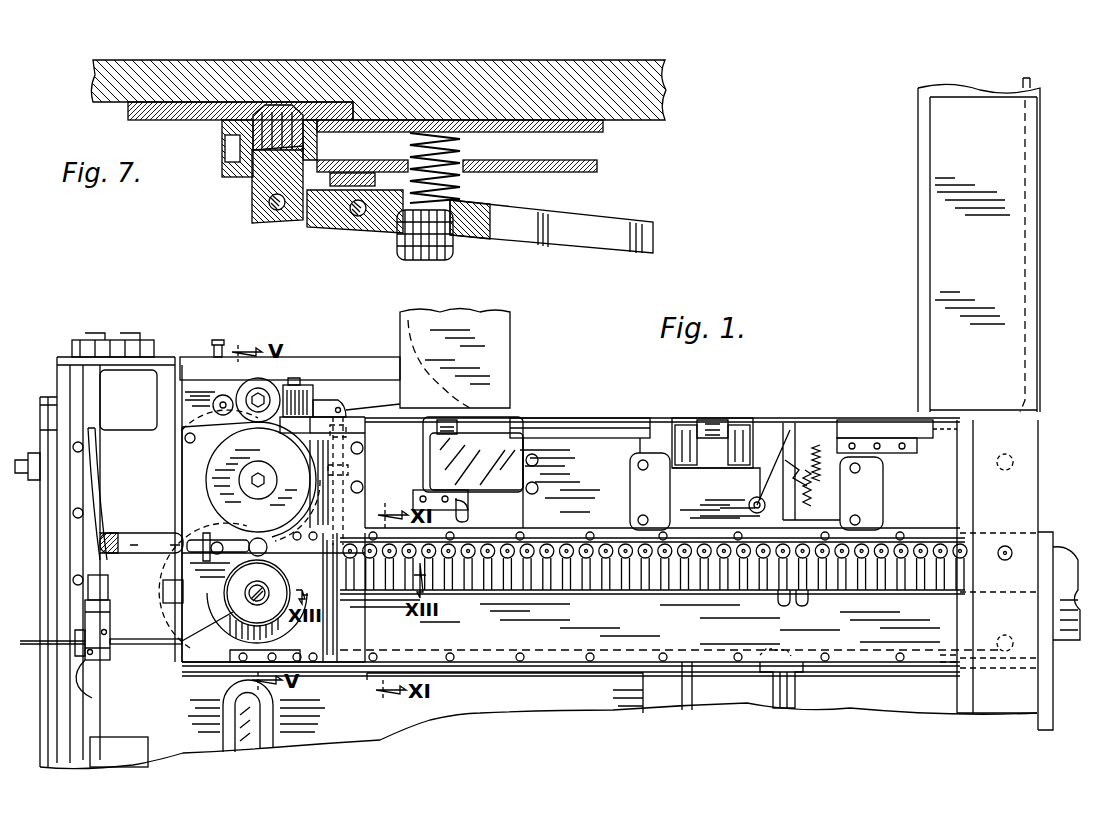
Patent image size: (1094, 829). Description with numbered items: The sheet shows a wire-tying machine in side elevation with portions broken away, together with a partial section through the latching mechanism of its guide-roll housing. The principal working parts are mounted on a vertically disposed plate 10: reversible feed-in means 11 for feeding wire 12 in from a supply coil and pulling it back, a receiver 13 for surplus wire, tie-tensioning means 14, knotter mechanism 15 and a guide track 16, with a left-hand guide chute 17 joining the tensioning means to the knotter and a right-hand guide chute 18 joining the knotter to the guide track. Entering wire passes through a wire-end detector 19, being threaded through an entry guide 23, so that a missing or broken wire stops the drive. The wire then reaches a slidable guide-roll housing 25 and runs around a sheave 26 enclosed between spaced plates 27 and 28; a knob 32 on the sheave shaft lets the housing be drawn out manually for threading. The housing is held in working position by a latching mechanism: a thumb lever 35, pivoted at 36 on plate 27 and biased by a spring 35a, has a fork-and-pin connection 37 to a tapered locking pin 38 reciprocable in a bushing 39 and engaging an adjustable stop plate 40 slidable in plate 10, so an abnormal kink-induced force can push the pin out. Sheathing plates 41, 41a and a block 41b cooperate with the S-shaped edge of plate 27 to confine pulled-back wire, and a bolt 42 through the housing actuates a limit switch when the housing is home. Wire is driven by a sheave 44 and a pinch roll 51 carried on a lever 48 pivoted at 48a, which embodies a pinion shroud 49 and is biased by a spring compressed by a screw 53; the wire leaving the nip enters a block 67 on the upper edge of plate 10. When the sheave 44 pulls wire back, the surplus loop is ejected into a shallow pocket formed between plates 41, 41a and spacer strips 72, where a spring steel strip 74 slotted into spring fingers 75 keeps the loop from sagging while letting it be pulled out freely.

In FIG. 7, the plate 10 is at (558, 72).
In FIG. 1, the plate 10 is at (142, 497).
In FIG. 1, the feed-in means 11 is at (172, 470).
In FIG. 1, the wire 12 is at (34, 640).
In FIG. 1, the receiver 13 is at (640, 622).
In FIG. 1, the tie-tensioning means 14 is at (485, 445).
In FIG. 1, the knotter mechanism 15 is at (710, 418).
In FIG. 1, the guide track 16 is at (510, 336).
In FIG. 1, the left-hand guide chute 17 is at (580, 428).
In FIG. 1, the right-hand guide chute 18 is at (866, 428).
In FIG. 1, the wire-end detector 19 is at (86, 610).
In FIG. 1, the entry guide 23 is at (97, 687).
In FIG. 1, the slidable guide-roll housing 25 is at (233, 580).
In FIG. 1, the sheave 26 is at (155, 592).
In FIG. 7, the plate 27 is at (596, 170).
In FIG. 1, the plate 27 is at (192, 643).
In FIG. 7, the plate 28 is at (600, 130).
In FIG. 1, the knob 32 is at (230, 613).
In FIG. 7, the thumb lever 35 is at (515, 248).
In FIG. 1, the thumb lever 35 is at (257, 600).
In FIG. 7, the spring 35a is at (458, 180).
In FIG. 7, the pivot 36 is at (345, 226).
In FIG. 7, the fork-and-pin connection 37 is at (270, 224).
In FIG. 7, the locking pin 38 is at (262, 183).
In FIG. 7, the bushing 39 is at (222, 150).
In FIG. 1, the bushing 39 is at (194, 541).
In FIG. 7, the adjustable stop plate 40 is at (196, 98).
In FIG. 1, the adjustable stop plate 40 is at (138, 537).
In FIG. 1, the sheathing plate 41 is at (328, 540).
In FIG. 1, the sheathing plate 41a is at (320, 645).
In FIG. 1, the block 41b is at (232, 676).
In FIG. 1, the bolt 42 is at (185, 441).
In FIG. 1, the sheave 44 is at (258, 480).
In FIG. 1, the lever 48 is at (330, 402).
In FIG. 1, the pivot 48a is at (160, 406).
In FIG. 1, the pinion shroud 49 is at (215, 380).
In FIG. 1, the pinch roll 51 is at (270, 392).
In FIG. 1, the screw 53 is at (308, 386).
In FIG. 1, the block 67 is at (295, 425).
In FIG. 1, the spacer strips 72 is at (777, 669).
In FIG. 1, the strip 74 is at (687, 584).
In FIG. 1, the spring fingers 75 is at (810, 604).